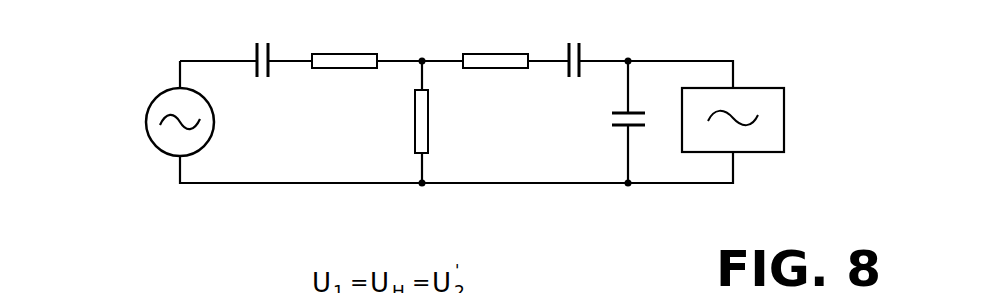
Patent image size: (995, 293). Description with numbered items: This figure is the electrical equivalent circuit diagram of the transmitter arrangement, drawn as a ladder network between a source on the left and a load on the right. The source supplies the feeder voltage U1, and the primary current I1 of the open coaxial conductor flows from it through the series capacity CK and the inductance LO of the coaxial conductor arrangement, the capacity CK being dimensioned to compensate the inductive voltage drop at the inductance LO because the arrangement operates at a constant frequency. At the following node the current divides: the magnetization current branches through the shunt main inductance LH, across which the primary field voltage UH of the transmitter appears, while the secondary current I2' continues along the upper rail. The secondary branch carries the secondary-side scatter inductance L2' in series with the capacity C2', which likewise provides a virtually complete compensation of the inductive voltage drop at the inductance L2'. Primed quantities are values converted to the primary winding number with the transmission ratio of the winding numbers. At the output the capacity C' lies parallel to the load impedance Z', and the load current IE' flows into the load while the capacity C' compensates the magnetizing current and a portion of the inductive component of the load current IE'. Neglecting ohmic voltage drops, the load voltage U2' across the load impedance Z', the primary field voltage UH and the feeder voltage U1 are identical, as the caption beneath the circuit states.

The feeder voltage U1 is at (127, 75).
The current of the open coaxial conductor I1 is at (232, 49).
The capacity CK is at (255, 77).
The inductance of the coaxial conductor arrangement LO is at (349, 68).
The main inductance LH is at (432, 94).
The primary field voltage UH is at (401, 97).
The secondary current I2' is at (522, 23).
The secondary-side scatter inductance L2' is at (495, 93).
The capacity C2' is at (567, 91).
The capacity C' is at (612, 143).
The load current IE' is at (682, 23).
The load impedance Z' is at (733, 152).
The load voltage U2' is at (834, 118).